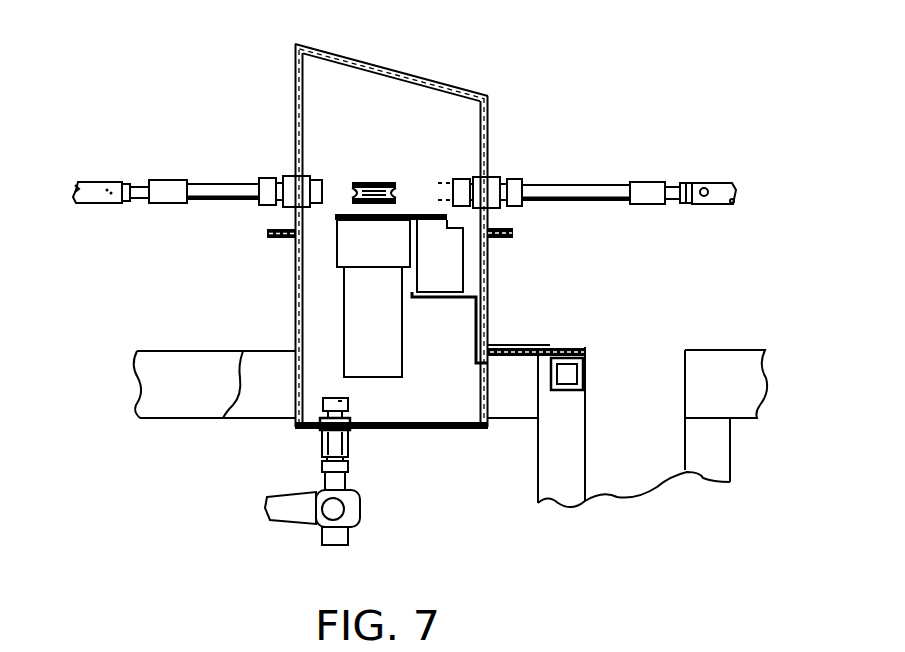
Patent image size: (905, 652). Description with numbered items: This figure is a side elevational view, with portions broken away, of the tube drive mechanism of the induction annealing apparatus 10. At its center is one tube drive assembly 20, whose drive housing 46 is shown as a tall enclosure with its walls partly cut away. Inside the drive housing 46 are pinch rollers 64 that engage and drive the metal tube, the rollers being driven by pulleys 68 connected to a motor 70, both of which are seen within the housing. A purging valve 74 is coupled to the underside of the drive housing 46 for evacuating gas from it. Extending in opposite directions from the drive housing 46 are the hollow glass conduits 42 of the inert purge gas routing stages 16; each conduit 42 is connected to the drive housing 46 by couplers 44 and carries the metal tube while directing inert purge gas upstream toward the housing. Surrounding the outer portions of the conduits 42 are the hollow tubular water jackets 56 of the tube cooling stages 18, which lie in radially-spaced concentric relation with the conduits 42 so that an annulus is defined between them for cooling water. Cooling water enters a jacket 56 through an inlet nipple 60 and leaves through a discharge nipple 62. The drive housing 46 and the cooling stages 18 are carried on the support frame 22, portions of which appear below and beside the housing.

The induction annealing apparatus 10 is at (692, 135).
The inert purge gas routing stage 16 is at (225, 182).
The tube cooling stage 18 is at (102, 176).
The tube drive assembly 20 is at (472, 78).
The support frame 22 is at (535, 430).
The hollow glass conduit 42 is at (212, 201).
The coupler 44 is at (168, 178).
The drive housing 46 is at (489, 133).
The hollow tubular water jacket 56 is at (95, 205).
The inlet nipple 60 is at (112, 181).
The discharge nipple 62 is at (706, 200).
The pinch roller 64 is at (376, 182).
The pulley 68 is at (377, 221).
The motor 70 is at (457, 267).
The purging valve 74 is at (352, 488).